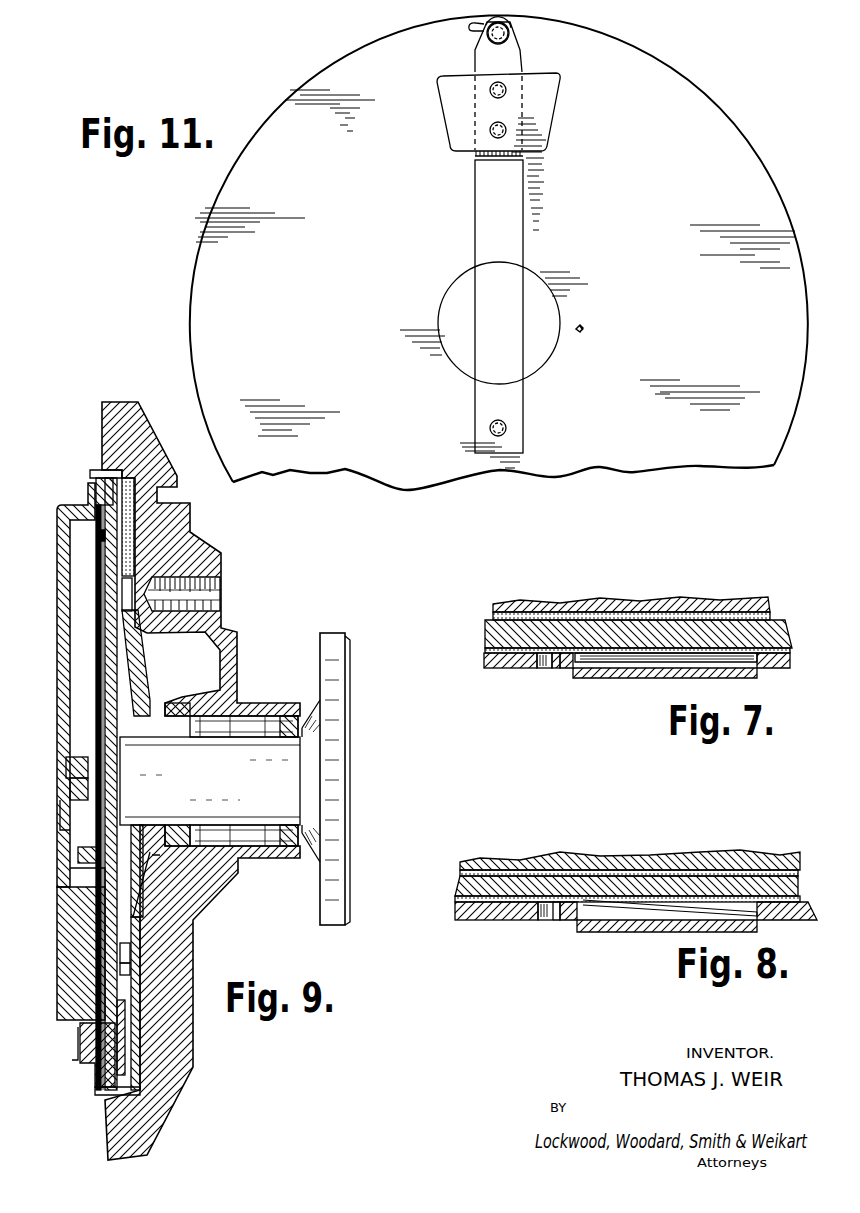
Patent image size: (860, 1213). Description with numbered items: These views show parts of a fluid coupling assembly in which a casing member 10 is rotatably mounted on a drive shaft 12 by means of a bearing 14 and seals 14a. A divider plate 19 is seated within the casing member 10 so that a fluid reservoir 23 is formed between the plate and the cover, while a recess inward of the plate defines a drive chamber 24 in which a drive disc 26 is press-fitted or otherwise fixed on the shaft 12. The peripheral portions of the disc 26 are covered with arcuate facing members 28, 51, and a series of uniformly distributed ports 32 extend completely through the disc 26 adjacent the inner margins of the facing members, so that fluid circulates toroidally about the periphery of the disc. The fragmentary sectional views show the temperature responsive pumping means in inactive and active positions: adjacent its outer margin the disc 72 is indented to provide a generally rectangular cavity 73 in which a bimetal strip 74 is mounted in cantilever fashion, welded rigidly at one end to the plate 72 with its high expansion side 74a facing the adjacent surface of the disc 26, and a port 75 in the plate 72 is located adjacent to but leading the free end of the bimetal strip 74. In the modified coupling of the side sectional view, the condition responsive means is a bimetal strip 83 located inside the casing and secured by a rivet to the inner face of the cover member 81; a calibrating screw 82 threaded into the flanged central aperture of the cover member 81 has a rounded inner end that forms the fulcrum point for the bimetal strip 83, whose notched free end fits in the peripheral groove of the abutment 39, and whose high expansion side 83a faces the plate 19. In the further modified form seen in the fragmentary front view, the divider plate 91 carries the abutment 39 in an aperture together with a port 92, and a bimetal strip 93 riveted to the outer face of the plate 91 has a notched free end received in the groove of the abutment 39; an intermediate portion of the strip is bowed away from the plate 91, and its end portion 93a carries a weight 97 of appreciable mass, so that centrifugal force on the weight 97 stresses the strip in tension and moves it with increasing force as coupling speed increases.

In FIG. 9, the casing member 10 is at (205, 557).
In FIG. 9, the drive shaft 12 is at (208, 779).
In FIG. 9, the bearing 14 is at (230, 730).
In FIG. 9, the seals 14a is at (175, 713).
In FIG. 9, the divider plate 19 is at (108, 658).
In FIG. 9, the fluid reservoir 23 is at (84, 1028).
In FIG. 9, the drive chamber 24 is at (115, 968).
In FIG. 9, the drive disc 26 is at (128, 947).
In FIG. 7, the drive disc 26 is at (644, 648).
In FIG. 8, the drive disc 26 is at (537, 882).
In FIG. 9, the arcuate facing member 28 is at (112, 1005).
In FIG. 7, the arcuate facing member 28 is at (557, 670).
In FIG. 8, the arcuate facing member 28 is at (522, 902).
In FIG. 9, the ports 32 is at (126, 971).
In FIG. 11, the abutment 39 is at (523, 37).
In FIG. 9, the abutment 39 is at (97, 492).
In FIG. 9, the arcuate facing member 51 is at (135, 1062).
In FIG. 7, the arcuate facing member 51 is at (548, 616).
In FIG. 8, the arcuate facing member 51 is at (580, 871).
In FIG. 7, the disc 72 is at (500, 669).
In FIG. 8, the disc 72 is at (497, 921).
In FIG. 7, the cavity 73 is at (768, 665).
In FIG. 8, the cavity 73 is at (586, 912).
In FIG. 7, the bimetal strip 74 is at (604, 678).
In FIG. 8, the bimetal strip 74 is at (606, 906).
In FIG. 7, the high expansion side 74a is at (654, 656).
In FIG. 7, the port 75 is at (548, 669).
In FIG. 8, the port 75 is at (552, 921).
In FIG. 9, the cover member 81 is at (57, 604).
In FIG. 9, the calibrating screw 82 is at (66, 772).
In FIG. 9, the bimetal strip 83 is at (97, 672).
In FIG. 9, the high expansion side 83a is at (101, 535).
In FIG. 11, the divider plate 91 is at (620, 293).
In FIG. 11, the port 92 is at (480, 31).
In FIG. 11, the bimetal strip 93 is at (508, 246).
In FIG. 11, the end portion 93a is at (478, 167).
In FIG. 11, the weight 97 is at (455, 99).